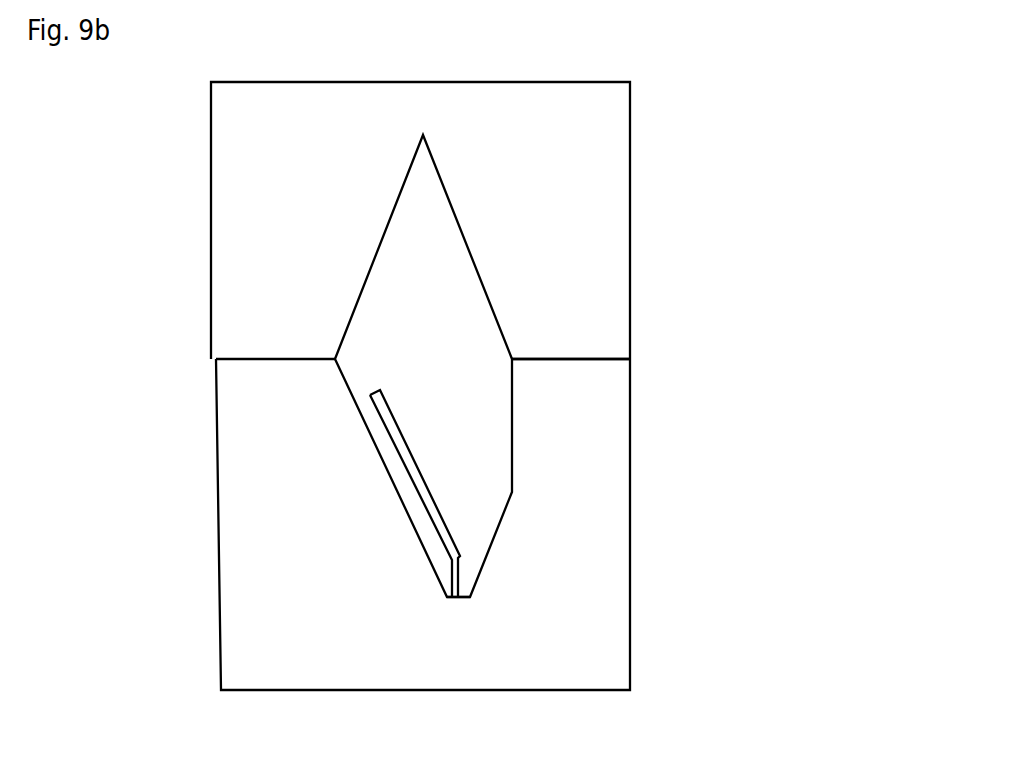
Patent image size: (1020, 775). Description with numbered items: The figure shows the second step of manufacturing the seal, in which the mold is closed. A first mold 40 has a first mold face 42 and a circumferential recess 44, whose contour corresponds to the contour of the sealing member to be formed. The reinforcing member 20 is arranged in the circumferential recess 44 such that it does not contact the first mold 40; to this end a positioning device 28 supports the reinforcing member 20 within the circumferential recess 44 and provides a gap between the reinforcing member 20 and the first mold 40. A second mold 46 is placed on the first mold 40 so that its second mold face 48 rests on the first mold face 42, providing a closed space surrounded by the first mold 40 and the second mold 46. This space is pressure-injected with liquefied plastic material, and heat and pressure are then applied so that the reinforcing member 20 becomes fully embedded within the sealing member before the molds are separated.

The reinforcing member 20 is at (393, 449).
The positioning device 28 is at (460, 578).
The first mold 40 is at (608, 537).
The first mold face 42 is at (593, 360).
The circumferential recess 44 is at (357, 377).
The second mold 46 is at (603, 160).
The second mold face 48 is at (610, 360).